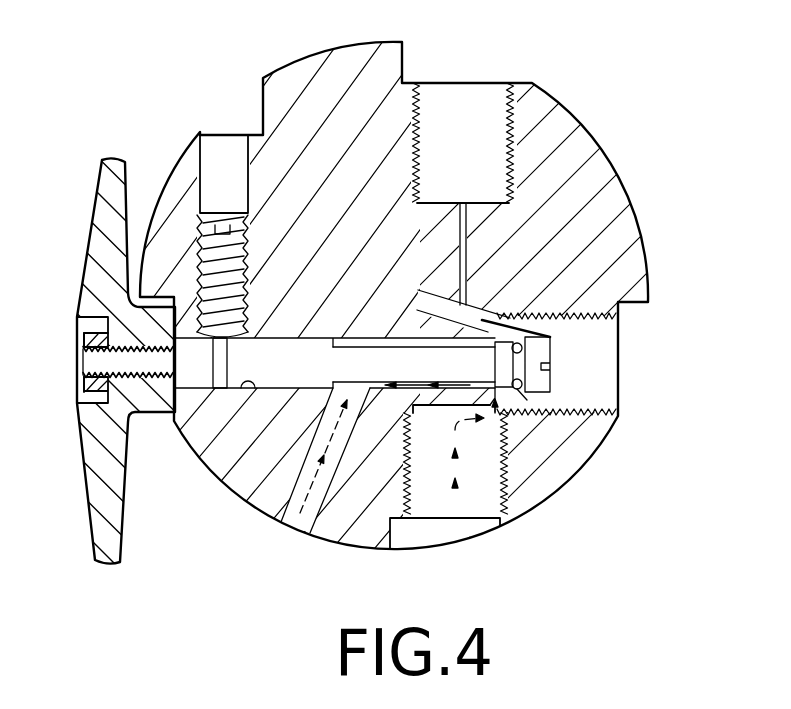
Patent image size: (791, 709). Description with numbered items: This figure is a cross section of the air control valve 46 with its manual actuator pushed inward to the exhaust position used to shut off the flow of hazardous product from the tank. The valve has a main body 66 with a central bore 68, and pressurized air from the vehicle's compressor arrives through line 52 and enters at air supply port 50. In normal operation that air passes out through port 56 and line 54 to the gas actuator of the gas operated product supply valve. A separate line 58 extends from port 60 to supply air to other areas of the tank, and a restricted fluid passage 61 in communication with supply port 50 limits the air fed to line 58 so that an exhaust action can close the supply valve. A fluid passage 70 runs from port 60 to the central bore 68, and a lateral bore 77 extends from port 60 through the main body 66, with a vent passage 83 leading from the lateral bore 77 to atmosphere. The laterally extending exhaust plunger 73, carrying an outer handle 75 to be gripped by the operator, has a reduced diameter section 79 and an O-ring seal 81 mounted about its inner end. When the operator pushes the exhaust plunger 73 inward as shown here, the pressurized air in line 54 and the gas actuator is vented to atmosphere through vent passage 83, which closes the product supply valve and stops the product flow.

The air control valve 46 is at (620, 133).
The air supply port 50 is at (503, 103).
The line 52 is at (466, 112).
The line 54 is at (455, 418).
The port 56 is at (437, 512).
The line 58 is at (612, 368).
The port 60 is at (598, 350).
The restricted fluid passage 61 is at (460, 207).
The main body 66 is at (593, 238).
The central bore 68 is at (381, 308).
The fluid passage 70 is at (551, 336).
The exhaust plunger 73 is at (300, 360).
The outer handle 75 is at (100, 455).
The lateral bore 77 is at (238, 388).
The reduced diameter section 79 is at (381, 368).
The O-ring seal 81 is at (528, 400).
The vent passage 83 is at (303, 520).